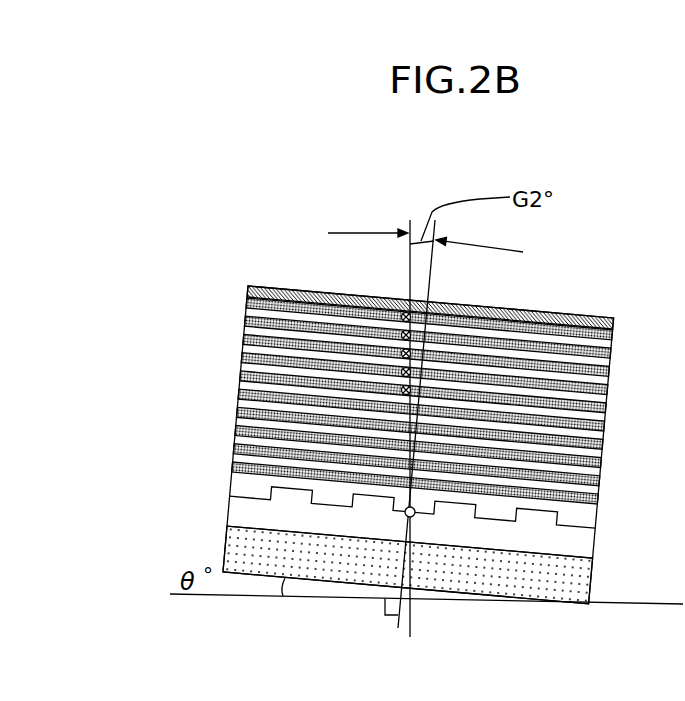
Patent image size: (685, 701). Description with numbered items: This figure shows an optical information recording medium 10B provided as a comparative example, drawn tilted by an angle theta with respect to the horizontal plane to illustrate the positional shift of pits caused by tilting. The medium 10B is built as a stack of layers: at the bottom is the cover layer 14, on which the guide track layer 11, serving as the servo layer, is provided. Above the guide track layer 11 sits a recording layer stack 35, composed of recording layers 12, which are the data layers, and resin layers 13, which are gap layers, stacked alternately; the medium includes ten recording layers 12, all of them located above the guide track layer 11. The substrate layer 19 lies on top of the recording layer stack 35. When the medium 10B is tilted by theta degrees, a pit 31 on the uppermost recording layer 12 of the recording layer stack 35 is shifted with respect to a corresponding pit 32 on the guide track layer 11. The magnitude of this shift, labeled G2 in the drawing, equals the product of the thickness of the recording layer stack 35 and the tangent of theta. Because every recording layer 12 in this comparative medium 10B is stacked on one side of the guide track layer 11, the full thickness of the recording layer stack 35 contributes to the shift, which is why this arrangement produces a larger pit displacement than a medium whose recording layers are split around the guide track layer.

The optical information recording medium 10B is at (285, 178).
The substrate layer 19 is at (592, 314).
The recording layer stack 35 is at (223, 292).
The resin layer 13 is at (593, 472).
The recording layer 12 is at (597, 482).
The guide track layer 11 is at (585, 548).
The cover layer 14 is at (588, 582).
The pit 31 is at (395, 298).
The pit 32 is at (410, 512).